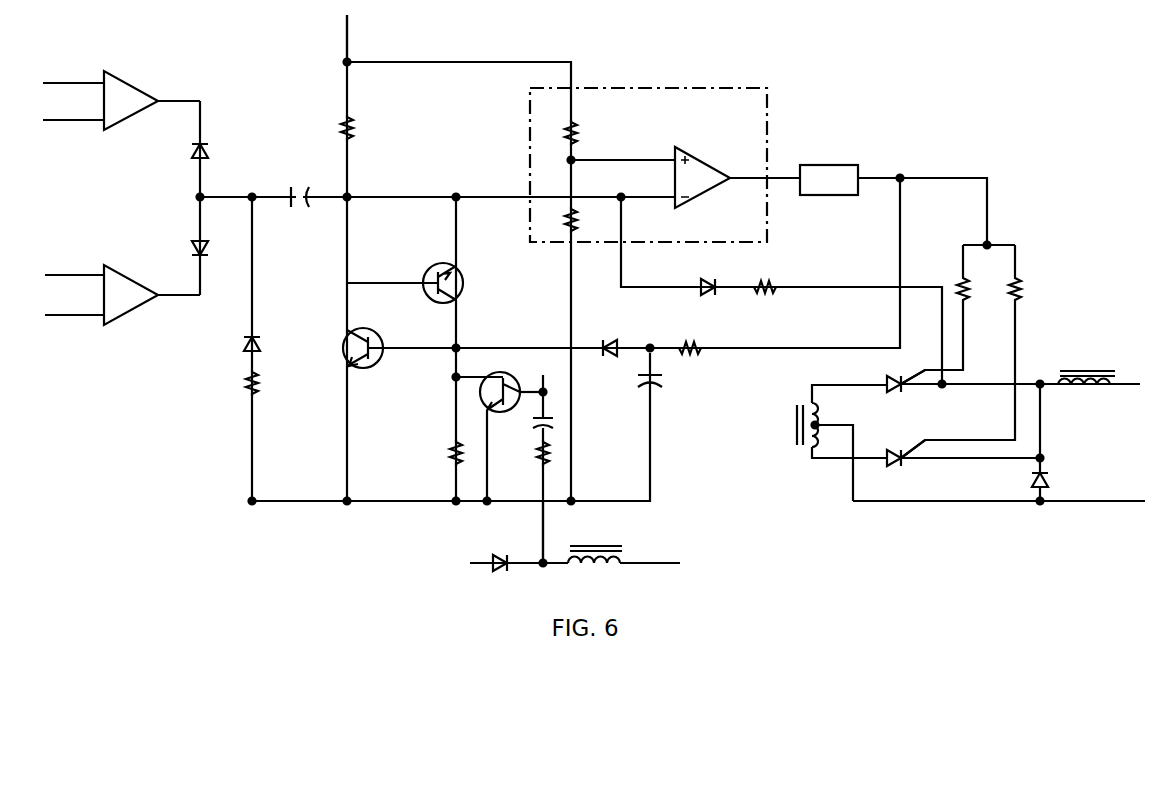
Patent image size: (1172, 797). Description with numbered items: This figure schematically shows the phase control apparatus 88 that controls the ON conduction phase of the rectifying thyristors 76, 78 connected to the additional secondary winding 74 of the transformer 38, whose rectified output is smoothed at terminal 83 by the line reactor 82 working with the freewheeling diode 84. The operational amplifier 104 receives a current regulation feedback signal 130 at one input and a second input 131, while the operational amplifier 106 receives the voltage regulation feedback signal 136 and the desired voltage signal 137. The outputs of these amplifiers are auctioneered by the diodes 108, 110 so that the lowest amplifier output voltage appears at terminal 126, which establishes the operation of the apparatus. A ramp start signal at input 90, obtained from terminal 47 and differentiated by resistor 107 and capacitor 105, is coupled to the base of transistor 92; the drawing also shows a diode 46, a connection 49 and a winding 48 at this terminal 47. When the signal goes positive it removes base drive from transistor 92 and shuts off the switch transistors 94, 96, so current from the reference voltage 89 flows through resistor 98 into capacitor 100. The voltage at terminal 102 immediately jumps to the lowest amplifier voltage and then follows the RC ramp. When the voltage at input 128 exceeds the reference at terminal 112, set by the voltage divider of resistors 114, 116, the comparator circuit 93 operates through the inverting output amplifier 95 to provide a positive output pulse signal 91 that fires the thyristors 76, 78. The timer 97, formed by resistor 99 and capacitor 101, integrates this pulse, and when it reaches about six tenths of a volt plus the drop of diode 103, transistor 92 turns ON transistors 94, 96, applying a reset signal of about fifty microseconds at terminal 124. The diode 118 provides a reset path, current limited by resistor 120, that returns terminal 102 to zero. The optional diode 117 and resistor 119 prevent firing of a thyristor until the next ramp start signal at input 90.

The current regulation feedback signal 130 is at (82, 82).
The second input line 131 is at (80, 118).
The operational amplifier 104 is at (128, 86).
The operational amplifier 106 is at (125, 280).
The voltage regulation feedback signal 136 is at (72, 274).
The desired voltage signal 137 is at (73, 316).
The diode 108 is at (209, 147).
The diode 110 is at (209, 248).
The terminal 126 is at (197, 197).
The diode 118 is at (244, 343).
The resistor 120 is at (246, 385).
The reference voltage 89 is at (344, 38).
The resistor 98 is at (344, 128).
The capacitor 100 is at (296, 185).
The terminal 102 is at (350, 197).
The phase control apparatus 88 is at (527, 51).
The comparator circuit 93 is at (690, 88).
The resistor 114 is at (578, 132).
The terminal 112 is at (568, 160).
The input 128 is at (615, 197).
The resistor 116 is at (578, 224).
The diode 117 is at (704, 280).
The resistor 119 is at (768, 285).
The inverting output amplifier 95 is at (828, 165).
The output pulse signal 91 is at (886, 176).
The transistor 94 is at (432, 266).
The transistor 96 is at (376, 332).
The terminal 124 is at (452, 348).
The transistor 92 is at (502, 378).
The input 90 is at (543, 392).
The capacitor 105 is at (540, 430).
The resistor 107 is at (541, 462).
The diode 103 is at (608, 342).
The timer 97 is at (661, 337).
The resistor 99 is at (692, 342).
The capacitor 101 is at (636, 383).
The transformer 38 is at (800, 397).
The secondary winding 74 is at (822, 420).
The thyristor 76 is at (886, 380).
The thyristor 78 is at (892, 452).
The terminal 83 is at (1040, 382).
The line reactor 82 is at (1088, 392).
The freewheeling diode 84 is at (1030, 480).
The connection line 49 is at (540, 512).
The diode 46 is at (496, 555).
The terminal 47 is at (541, 561).
The inductor winding 48 is at (582, 568).